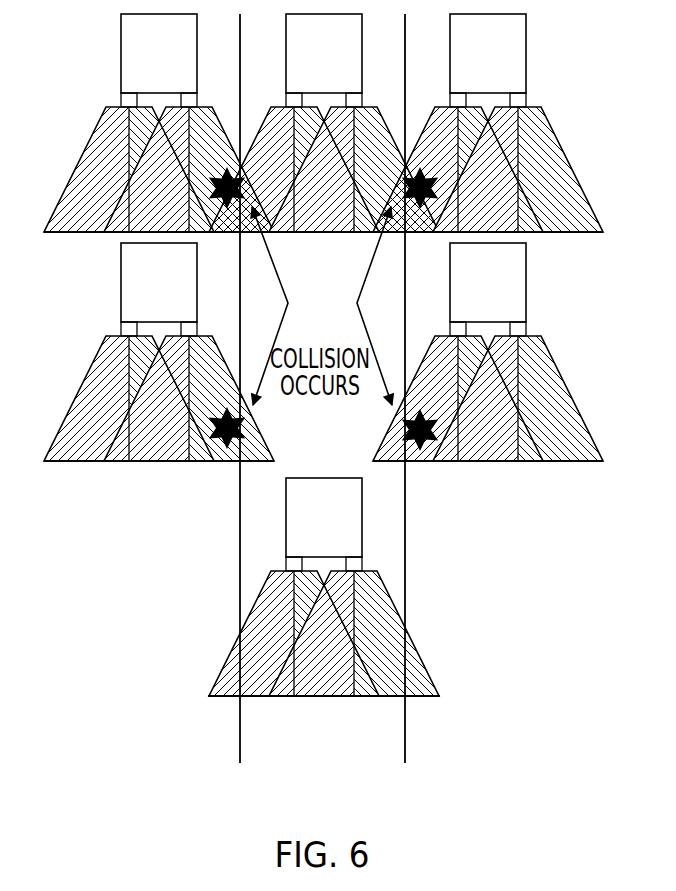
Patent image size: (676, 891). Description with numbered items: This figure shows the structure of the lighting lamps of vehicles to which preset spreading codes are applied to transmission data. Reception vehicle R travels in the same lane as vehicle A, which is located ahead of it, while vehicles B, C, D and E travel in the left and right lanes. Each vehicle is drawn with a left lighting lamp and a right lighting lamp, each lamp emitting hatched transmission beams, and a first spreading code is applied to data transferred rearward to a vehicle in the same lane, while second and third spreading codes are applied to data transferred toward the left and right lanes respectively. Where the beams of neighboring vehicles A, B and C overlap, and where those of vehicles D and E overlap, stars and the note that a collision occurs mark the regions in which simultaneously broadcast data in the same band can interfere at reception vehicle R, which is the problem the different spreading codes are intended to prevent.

The vehicle A is at (324, 123).
The vehicle B is at (159, 123).
The vehicle C is at (488, 123).
The vehicle D is at (159, 352).
The vehicle E is at (488, 352).
The reception vehicle R is at (324, 587).